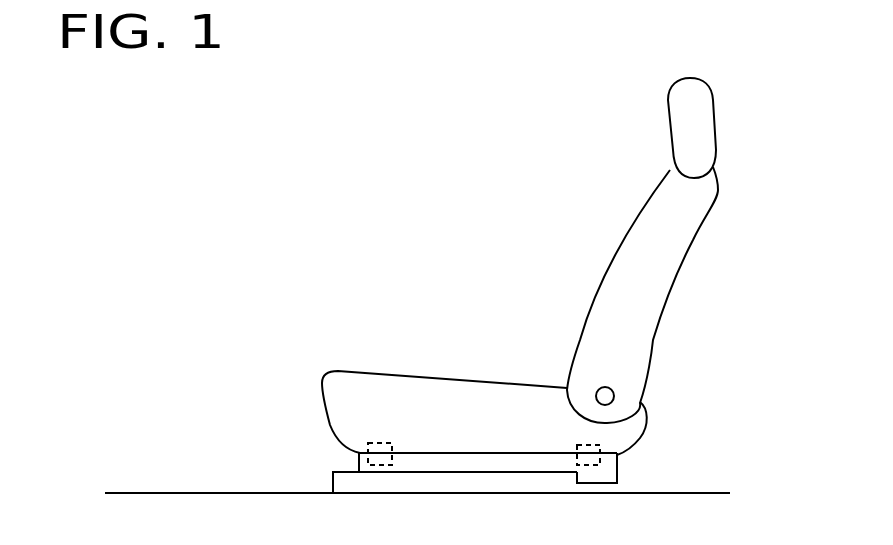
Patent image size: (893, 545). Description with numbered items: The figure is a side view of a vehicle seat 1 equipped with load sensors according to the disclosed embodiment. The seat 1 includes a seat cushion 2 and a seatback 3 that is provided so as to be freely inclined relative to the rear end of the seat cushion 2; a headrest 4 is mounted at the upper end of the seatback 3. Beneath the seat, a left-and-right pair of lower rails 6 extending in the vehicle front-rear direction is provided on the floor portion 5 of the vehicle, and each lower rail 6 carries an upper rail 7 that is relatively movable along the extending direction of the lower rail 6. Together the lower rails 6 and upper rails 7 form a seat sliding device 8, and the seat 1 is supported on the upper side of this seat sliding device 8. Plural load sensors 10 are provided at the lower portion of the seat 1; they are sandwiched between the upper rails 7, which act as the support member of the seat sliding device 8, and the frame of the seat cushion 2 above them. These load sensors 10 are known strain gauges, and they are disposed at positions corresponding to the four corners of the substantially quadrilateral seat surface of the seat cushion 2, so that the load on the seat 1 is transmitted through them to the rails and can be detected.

The seat 1 is at (385, 138).
The seat cushion 2 is at (428, 373).
The seatback 3 is at (695, 238).
The headrest 4 is at (712, 104).
The floor portion 5 is at (288, 493).
The lower rail 6 is at (345, 457).
The upper rail 7 is at (617, 463).
The seat sliding device 8 is at (700, 417).
The load sensor 10 is at (590, 443).